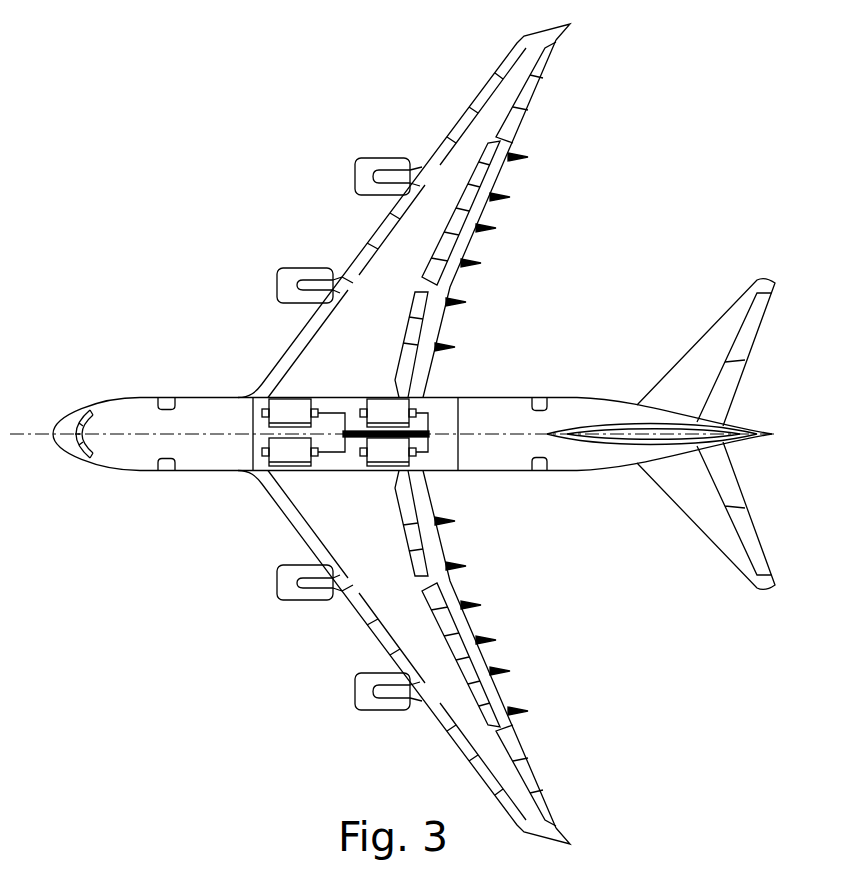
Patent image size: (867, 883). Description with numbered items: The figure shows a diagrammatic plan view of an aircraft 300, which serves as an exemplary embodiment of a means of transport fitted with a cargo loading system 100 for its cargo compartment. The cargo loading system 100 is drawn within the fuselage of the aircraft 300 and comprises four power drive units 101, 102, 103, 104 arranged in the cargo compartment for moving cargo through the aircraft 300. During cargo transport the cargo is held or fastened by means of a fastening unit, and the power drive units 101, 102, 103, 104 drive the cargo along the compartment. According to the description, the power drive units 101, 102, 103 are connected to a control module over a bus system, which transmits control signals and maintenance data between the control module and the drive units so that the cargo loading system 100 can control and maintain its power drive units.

The aircraft 300 is at (532, 267).
The cargo loading system 100 is at (458, 430).
The power drive unit 101 is at (312, 397).
The power drive unit 102 is at (312, 471).
The power drive unit 103 is at (445, 397).
The power drive unit 104 is at (447, 471).